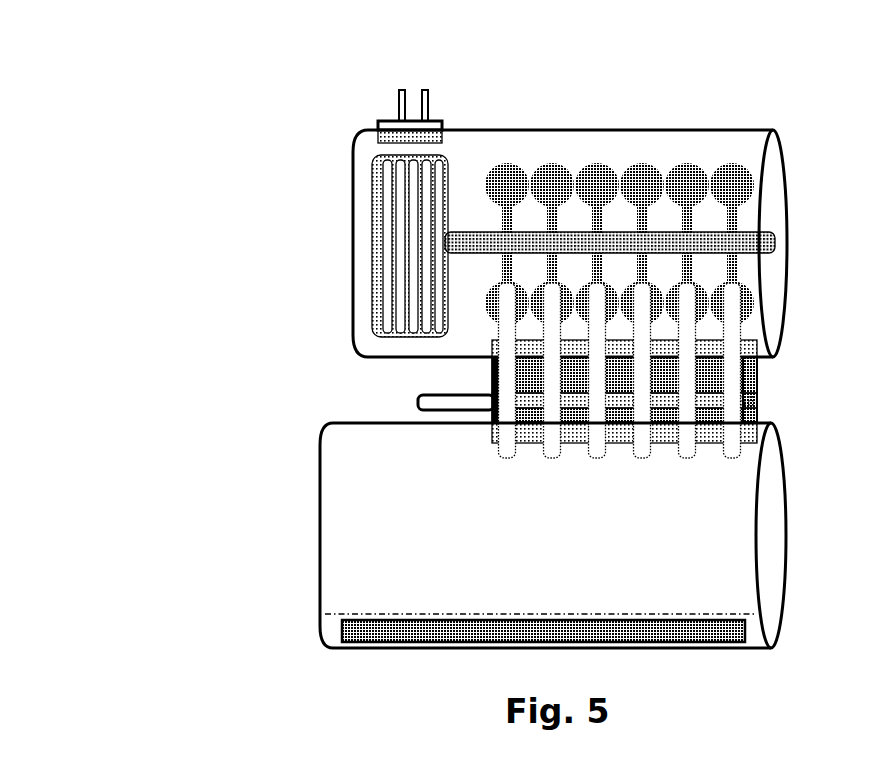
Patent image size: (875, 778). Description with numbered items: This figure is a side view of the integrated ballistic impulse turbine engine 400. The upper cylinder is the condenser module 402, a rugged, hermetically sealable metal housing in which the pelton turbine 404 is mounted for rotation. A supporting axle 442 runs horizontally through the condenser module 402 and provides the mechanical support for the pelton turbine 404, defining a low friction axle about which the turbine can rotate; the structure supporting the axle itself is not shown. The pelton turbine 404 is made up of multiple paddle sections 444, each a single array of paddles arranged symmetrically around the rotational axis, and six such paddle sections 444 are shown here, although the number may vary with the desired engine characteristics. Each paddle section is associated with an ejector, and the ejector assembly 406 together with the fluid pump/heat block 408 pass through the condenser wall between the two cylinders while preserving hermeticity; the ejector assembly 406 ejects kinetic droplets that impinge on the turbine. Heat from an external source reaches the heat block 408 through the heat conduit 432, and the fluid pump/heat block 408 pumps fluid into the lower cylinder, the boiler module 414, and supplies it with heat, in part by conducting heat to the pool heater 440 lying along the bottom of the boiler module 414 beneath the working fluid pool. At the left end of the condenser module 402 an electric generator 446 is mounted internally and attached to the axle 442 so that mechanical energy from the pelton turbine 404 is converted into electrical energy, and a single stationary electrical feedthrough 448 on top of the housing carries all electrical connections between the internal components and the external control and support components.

The integrated ballistic impulse turbine engine 400 is at (233, 156).
The condenser module 402 is at (773, 130).
The pelton turbine 404 is at (749, 214).
The ejector assembly 406 is at (757, 366).
The fluid pump/heat block 408 is at (757, 388).
The boiler module 414 is at (299, 504).
The heat conduit 432 is at (418, 405).
The pool heater 440 is at (342, 632).
The supporting axle 442 is at (777, 243).
The paddle sections 444 is at (682, 156).
The electric generator 446 is at (378, 193).
The electrical feedthrough 448 is at (412, 84).